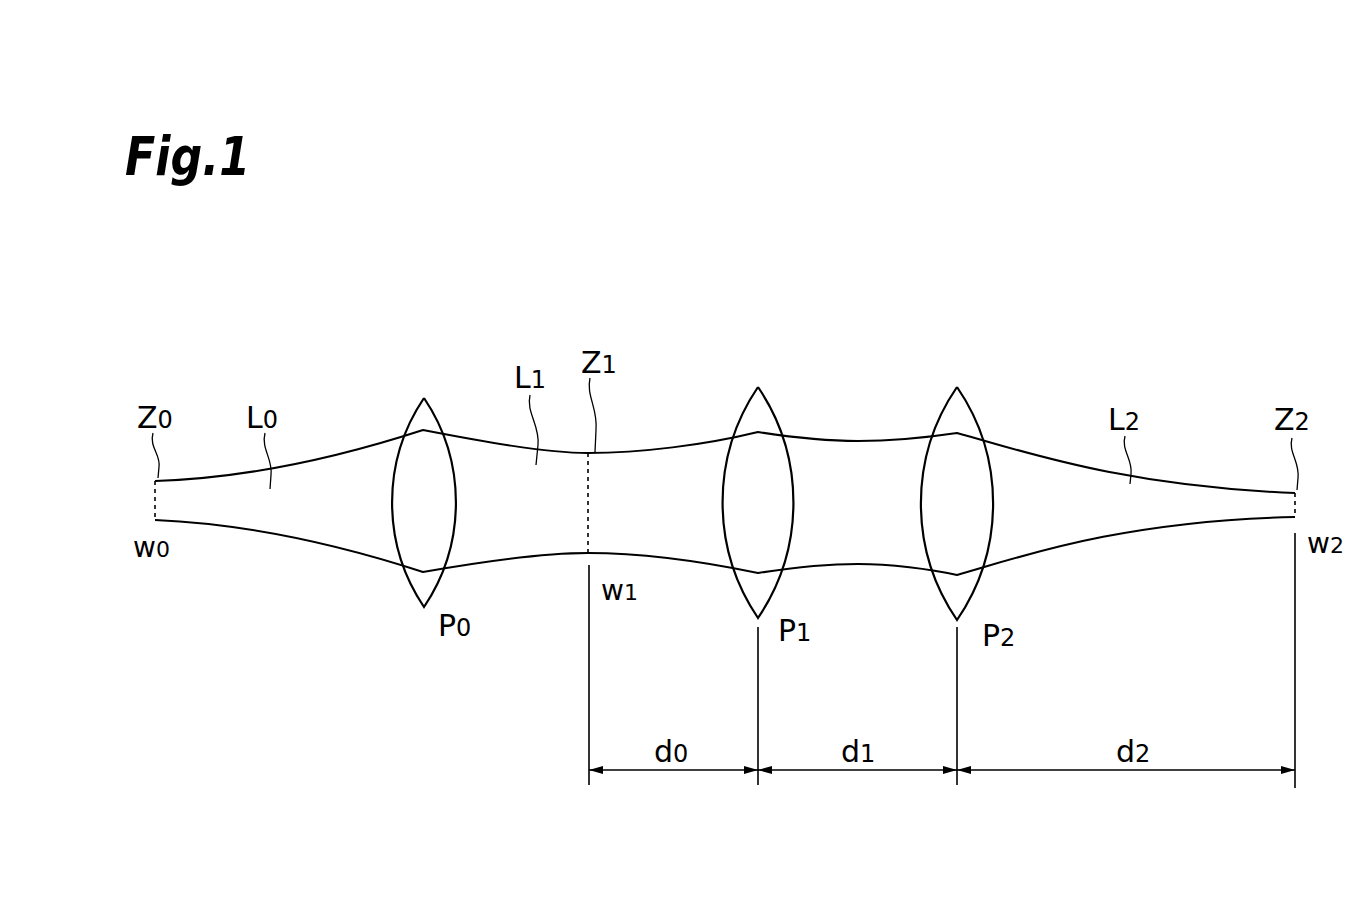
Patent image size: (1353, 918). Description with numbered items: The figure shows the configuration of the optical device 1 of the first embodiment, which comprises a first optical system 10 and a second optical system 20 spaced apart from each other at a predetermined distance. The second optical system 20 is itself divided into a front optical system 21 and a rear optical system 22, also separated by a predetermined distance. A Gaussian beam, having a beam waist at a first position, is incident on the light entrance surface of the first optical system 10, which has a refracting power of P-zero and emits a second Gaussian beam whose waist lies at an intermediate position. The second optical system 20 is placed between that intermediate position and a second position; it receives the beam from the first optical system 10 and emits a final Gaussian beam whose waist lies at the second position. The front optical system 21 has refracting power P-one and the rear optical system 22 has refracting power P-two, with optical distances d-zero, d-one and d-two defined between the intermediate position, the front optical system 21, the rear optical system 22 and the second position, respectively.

The optical device 1 is at (655, 260).
The first optical system 10 is at (433, 408).
The second optical system 20 is at (982, 319).
The front optical system 21 is at (765, 399).
The rear optical system 22 is at (966, 399).